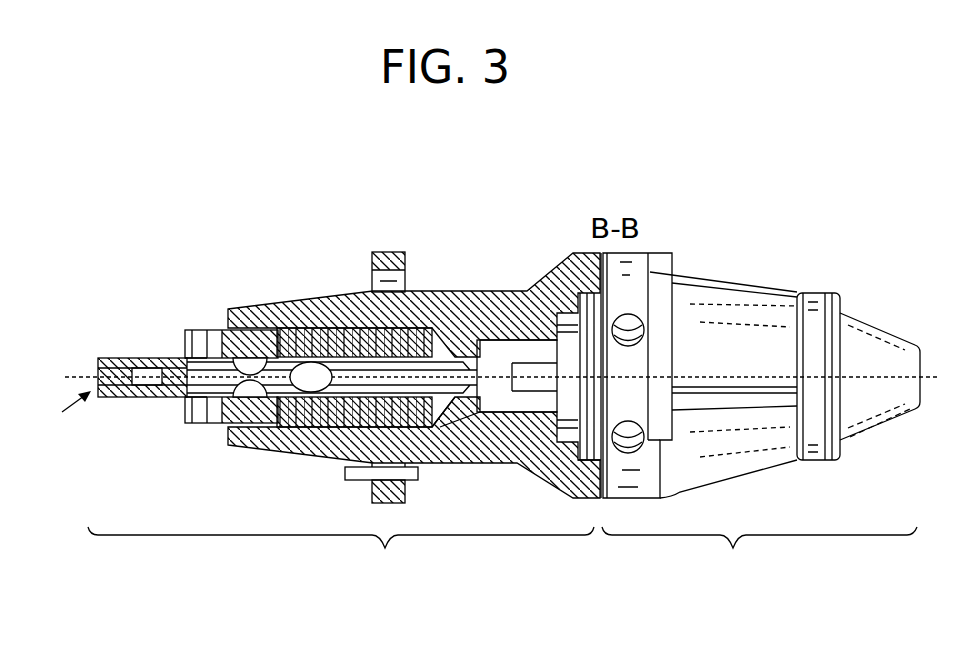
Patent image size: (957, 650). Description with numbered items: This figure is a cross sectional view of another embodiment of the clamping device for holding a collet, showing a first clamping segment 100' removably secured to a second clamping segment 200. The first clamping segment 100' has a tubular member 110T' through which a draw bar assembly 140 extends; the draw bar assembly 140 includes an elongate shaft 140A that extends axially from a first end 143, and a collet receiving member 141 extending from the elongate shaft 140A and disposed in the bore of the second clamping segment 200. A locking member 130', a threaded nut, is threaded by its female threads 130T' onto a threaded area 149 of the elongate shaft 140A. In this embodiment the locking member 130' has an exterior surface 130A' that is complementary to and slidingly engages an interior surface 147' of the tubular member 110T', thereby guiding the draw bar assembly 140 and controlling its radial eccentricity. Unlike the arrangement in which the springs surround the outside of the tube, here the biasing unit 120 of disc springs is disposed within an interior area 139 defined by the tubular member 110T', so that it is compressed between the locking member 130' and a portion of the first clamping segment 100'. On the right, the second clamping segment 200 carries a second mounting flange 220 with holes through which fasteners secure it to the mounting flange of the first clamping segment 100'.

The first clamping segment 100' is at (502, 485).
The second clamping segment 200 is at (759, 418).
The tubular member 110T' is at (553, 349).
The biasing unit 120 is at (327, 322).
The locking member 130' is at (231, 344).
The exterior surface 130A' is at (414, 370).
The female threads 130T' is at (180, 404).
The interior area 139 is at (451, 462).
The draw bar assembly 140 is at (398, 380).
The elongate shaft 140A is at (118, 397).
The collet receiving member 141 is at (513, 458).
The first end 143 is at (53, 413).
The interior surface 147' is at (262, 432).
The threaded area 149 is at (150, 358).
The second mounting flange 220 is at (660, 272).